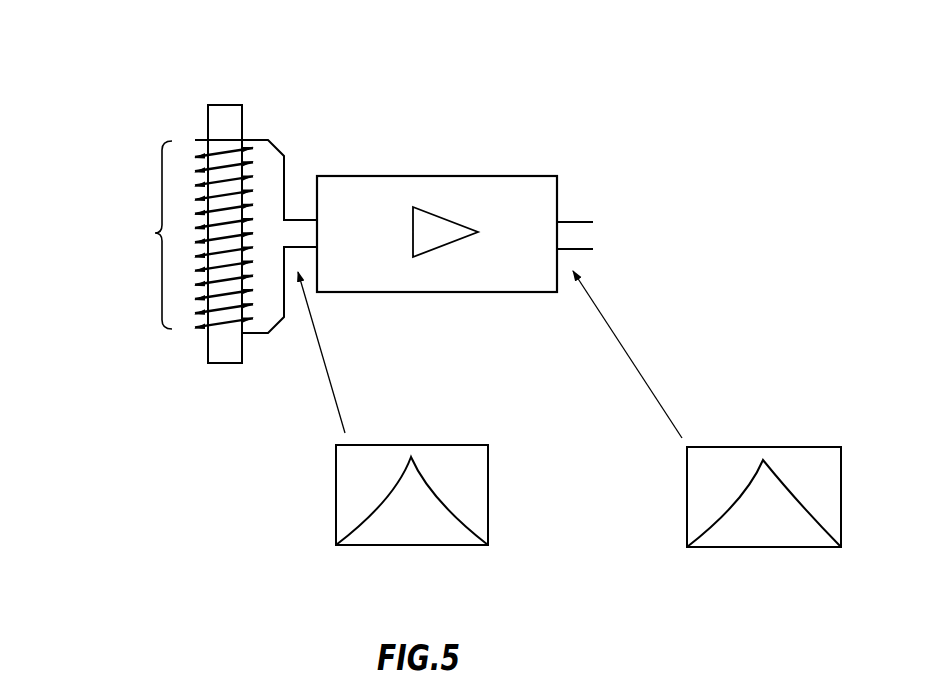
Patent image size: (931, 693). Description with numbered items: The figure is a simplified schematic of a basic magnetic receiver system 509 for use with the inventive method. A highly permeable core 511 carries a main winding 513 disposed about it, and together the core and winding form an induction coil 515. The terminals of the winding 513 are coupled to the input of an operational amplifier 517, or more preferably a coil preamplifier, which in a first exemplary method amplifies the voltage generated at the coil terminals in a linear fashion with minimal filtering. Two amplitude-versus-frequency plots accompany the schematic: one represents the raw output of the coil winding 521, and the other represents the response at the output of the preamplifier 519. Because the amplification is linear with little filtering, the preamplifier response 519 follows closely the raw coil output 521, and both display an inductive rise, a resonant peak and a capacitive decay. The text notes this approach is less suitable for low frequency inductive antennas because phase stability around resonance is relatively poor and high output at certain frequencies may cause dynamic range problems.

The magnetic receiver system 509 is at (646, 156).
The highly permeable core 511 is at (243, 118).
The main winding 513 is at (196, 139).
The induction coil 515 is at (152, 232).
The operational amplifier 517 is at (478, 176).
The output of the preamplifier 519 is at (817, 424).
The raw output of the coil winding 521 is at (462, 423).